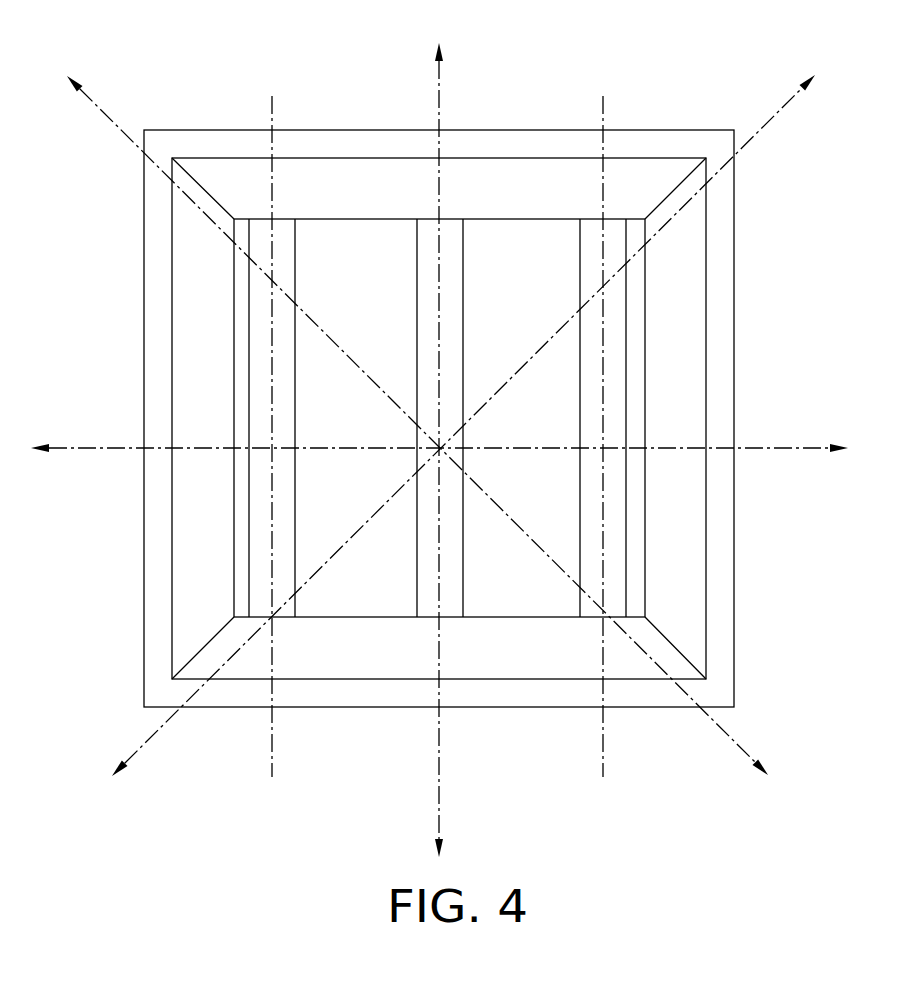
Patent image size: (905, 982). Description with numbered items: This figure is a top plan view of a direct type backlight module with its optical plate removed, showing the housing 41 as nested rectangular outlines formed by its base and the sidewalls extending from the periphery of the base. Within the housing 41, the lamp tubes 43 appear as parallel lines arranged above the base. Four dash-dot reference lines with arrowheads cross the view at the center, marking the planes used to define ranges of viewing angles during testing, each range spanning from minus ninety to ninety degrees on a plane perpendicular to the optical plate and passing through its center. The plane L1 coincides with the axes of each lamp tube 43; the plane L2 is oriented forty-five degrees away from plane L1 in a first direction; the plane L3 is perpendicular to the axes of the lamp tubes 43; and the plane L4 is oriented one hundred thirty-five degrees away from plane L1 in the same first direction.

The housing 41 is at (723, 663).
The lamp tubes 43 is at (453, 235).
The plane L1 is at (438, 82).
The plane L2 is at (788, 102).
The plane L3 is at (772, 448).
The plane L4 is at (727, 738).